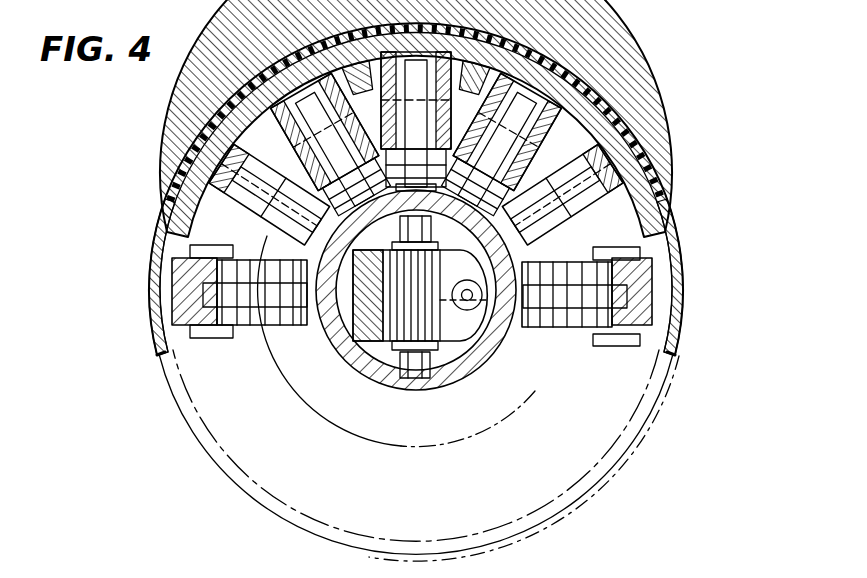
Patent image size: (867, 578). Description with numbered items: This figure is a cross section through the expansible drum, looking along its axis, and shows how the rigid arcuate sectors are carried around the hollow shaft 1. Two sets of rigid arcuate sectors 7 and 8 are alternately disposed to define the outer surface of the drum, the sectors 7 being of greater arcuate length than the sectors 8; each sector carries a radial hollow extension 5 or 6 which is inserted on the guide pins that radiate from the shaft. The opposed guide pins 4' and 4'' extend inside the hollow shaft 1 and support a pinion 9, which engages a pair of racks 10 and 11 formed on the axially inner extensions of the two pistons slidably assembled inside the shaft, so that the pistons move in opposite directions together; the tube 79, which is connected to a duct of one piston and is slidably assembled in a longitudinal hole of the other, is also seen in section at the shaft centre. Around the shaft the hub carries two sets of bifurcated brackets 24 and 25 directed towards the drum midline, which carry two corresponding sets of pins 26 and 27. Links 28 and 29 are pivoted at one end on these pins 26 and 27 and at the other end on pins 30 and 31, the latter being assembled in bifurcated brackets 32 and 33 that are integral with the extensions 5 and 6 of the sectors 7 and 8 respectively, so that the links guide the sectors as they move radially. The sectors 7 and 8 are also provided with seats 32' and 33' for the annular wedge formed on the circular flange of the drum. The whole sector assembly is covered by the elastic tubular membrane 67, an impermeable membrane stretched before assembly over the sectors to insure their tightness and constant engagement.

The hollow shaft 1 is at (416, 395).
The guide pin 4' is at (425, 233).
The guide pin 4'' is at (407, 386).
The radial hollow extension 5 is at (437, 133).
The radial hollow extension 6 is at (160, 340).
The rigid arcuate sector 7 is at (340, 43).
The rigid arcuate sector 8 is at (283, 68).
The pinion 9 is at (400, 323).
The rack 10 is at (360, 323).
The rack 11 is at (453, 337).
The bifurcated bracket 24 is at (513, 323).
The bifurcated bracket 25 is at (257, 323).
The pin 26 is at (290, 247).
The pin 27 is at (273, 327).
The link 28 is at (393, 53).
The link 29 is at (217, 297).
The pin 30 is at (280, 167).
The pin 31 is at (490, 123).
The bifurcated bracket 32 is at (612, 194).
The seat 32' is at (447, 32).
The bifurcated bracket 33 is at (459, 246).
The seat 33' is at (244, 119).
The elastic tubular membrane 67 is at (158, 230).
The tube 79 is at (470, 308).